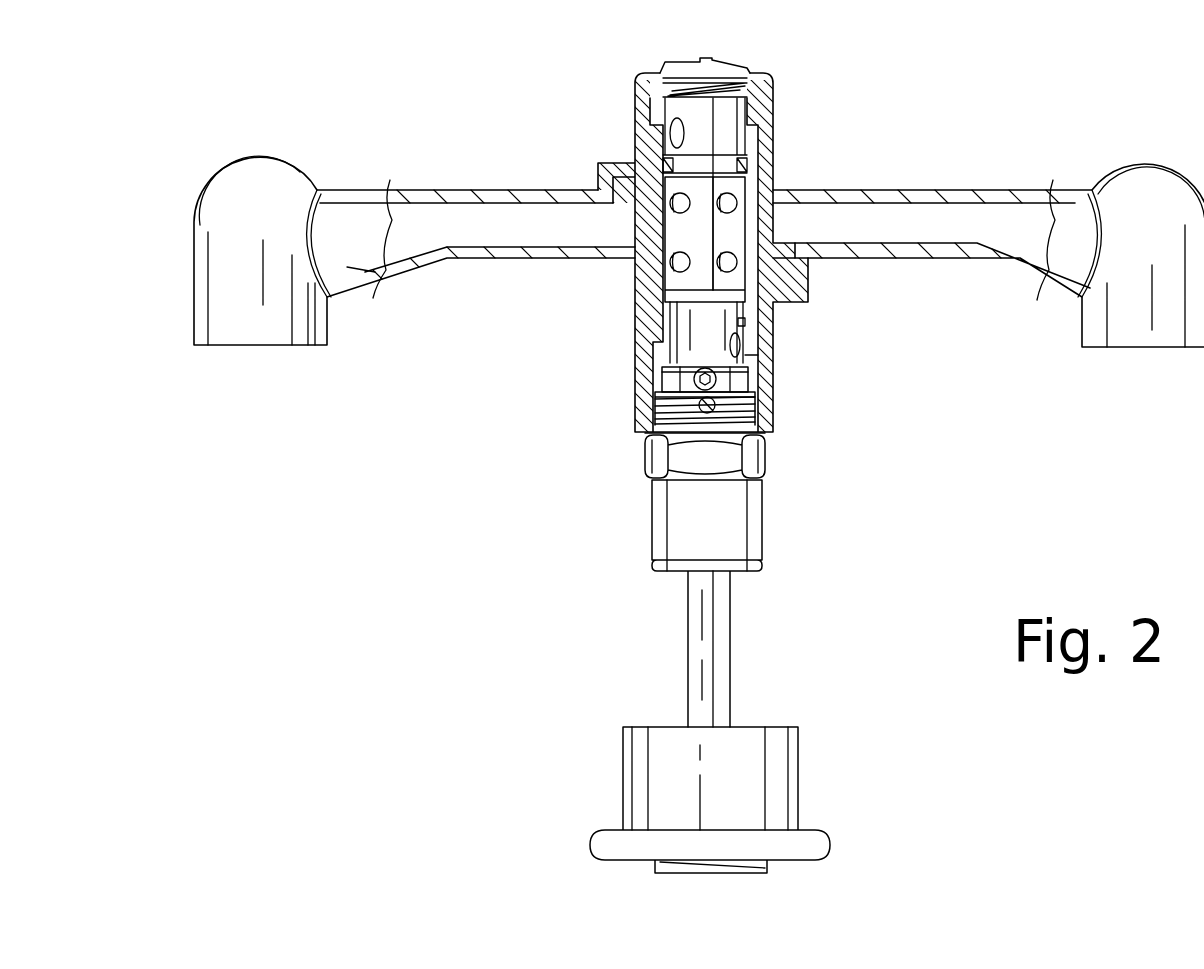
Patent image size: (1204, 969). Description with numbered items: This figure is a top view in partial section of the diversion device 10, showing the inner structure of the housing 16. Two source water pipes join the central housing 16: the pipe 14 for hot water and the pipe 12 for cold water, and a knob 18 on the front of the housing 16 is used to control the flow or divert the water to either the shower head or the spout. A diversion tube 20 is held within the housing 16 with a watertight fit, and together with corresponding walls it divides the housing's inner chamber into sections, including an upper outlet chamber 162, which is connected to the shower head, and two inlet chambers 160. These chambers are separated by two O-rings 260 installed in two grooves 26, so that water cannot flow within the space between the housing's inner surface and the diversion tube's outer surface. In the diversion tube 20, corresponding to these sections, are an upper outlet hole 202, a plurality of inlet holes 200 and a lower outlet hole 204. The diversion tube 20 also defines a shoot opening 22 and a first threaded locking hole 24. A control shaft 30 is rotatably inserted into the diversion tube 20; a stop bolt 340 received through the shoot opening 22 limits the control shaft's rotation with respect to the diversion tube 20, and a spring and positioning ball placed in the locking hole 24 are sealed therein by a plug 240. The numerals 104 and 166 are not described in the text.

The faucet assembly 10 is at (860, 119).
The cold water source pipe 12 is at (951, 198).
The hot water source pipe 14 is at (483, 198).
The housing 16 is at (655, 423).
The knob 18 is at (775, 788).
The diversion tube 20 is at (683, 321).
The shoot opening 22 is at (656, 378).
The first threaded locking hole 24 is at (680, 418).
The grooves 26 is at (746, 321).
The control shaft 30 is at (720, 618).
The inner wall 104 is at (753, 357).
The inlet chambers 160 is at (750, 196).
The upper outlet chamber 162 is at (753, 107).
The adjusting screw 166 is at (691, 68).
The inlet holes 200 is at (786, 259).
The upper outlet hole 202 is at (662, 136).
The lower outlet hole 204 is at (748, 343).
The plug 240 is at (645, 427).
The O-rings 260 is at (660, 157).
The stop bolt 340 is at (767, 390).